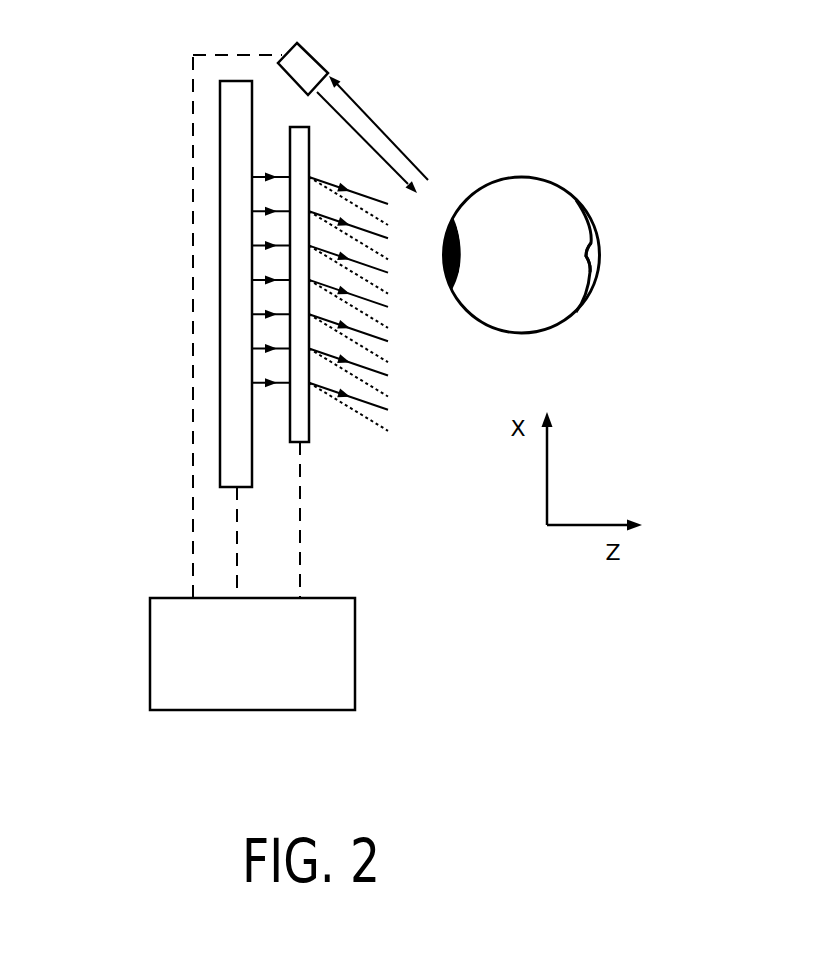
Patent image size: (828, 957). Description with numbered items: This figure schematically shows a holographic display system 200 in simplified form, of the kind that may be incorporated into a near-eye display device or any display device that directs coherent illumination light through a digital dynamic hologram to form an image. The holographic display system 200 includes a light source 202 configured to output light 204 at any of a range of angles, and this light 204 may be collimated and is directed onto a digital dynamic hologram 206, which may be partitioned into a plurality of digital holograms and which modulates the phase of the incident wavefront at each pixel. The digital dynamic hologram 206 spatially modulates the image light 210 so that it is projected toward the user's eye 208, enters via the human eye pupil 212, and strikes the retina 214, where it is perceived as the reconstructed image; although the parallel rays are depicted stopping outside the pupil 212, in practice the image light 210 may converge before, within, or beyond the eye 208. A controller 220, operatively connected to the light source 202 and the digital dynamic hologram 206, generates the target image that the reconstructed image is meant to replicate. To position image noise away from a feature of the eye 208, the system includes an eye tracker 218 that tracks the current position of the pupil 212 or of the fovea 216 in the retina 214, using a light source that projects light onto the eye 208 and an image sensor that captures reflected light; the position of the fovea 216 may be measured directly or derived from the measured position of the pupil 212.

The holographic display system 200 is at (112, 217).
The light source 202 is at (238, 490).
The light 204 is at (264, 143).
The digital dynamic hologram 206 is at (300, 445).
The user's eye 208 is at (517, 175).
The image light 210 is at (414, 346).
The human eye pupil 212 is at (472, 233).
The retina 214 is at (589, 188).
The fovea 216 is at (602, 229).
The eye tracker 218 is at (314, 57).
The controller 220 is at (342, 667).